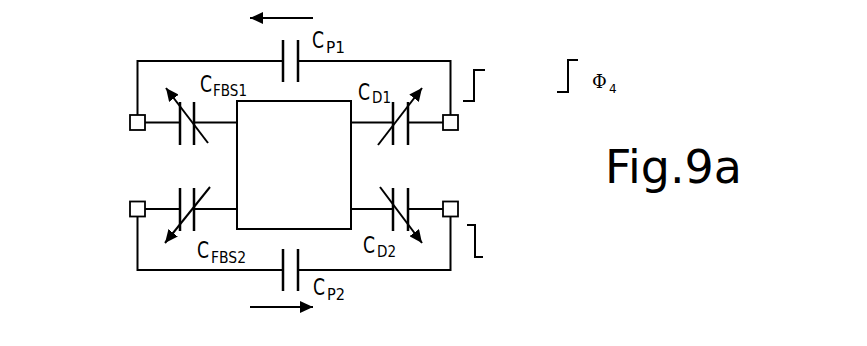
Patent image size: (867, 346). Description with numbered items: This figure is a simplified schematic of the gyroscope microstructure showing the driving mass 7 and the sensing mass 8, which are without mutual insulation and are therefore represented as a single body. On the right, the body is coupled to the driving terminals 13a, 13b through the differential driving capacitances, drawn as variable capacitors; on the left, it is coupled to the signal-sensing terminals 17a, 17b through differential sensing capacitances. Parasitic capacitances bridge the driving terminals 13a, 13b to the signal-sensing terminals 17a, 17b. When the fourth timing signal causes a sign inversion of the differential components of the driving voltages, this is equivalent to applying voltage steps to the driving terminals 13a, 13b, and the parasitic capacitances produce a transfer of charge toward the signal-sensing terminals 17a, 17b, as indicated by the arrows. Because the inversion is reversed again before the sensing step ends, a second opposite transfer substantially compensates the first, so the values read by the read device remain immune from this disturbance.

The driving mass 7 is at (294, 165).
The sensing mass 8 is at (294, 165).
The driving terminal 13a is at (458, 122).
The driving terminal 13b is at (458, 208).
The signal-sensing terminal 17a is at (130, 122).
The signal-sensing terminal 17b is at (130, 207).